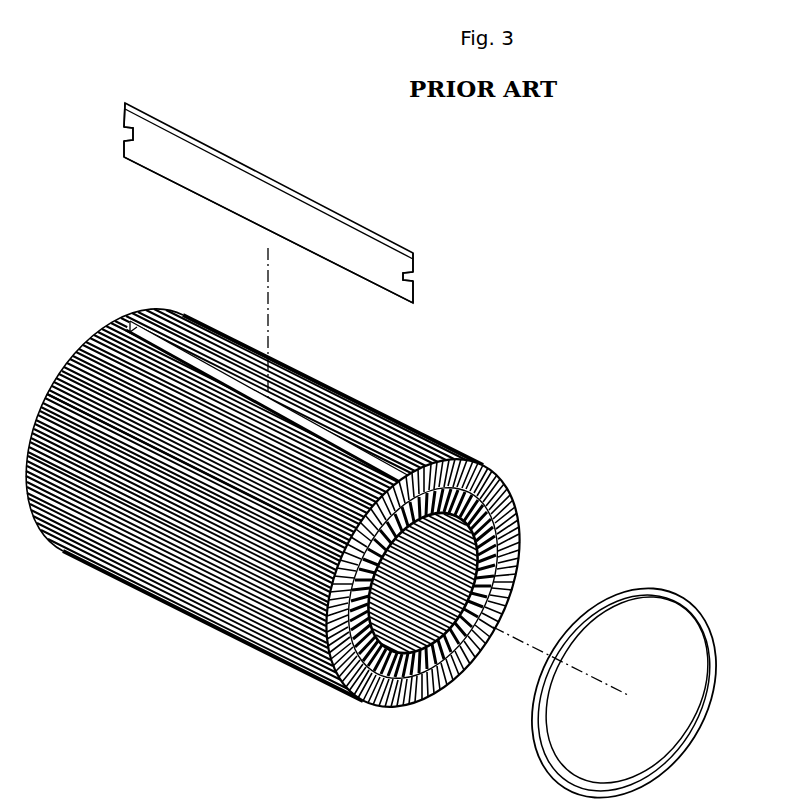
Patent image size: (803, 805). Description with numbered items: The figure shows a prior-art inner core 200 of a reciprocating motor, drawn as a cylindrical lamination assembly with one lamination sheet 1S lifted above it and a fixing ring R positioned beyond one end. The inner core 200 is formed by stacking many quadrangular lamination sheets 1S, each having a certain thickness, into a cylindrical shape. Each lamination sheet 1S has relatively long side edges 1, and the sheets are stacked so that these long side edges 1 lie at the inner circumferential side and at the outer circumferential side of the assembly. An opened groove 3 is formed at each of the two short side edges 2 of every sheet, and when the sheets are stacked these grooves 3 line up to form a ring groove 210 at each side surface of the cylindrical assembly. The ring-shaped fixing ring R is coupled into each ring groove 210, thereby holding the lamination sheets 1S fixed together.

The long side edge 1 is at (284, 186).
The short side edge 2 is at (126, 103).
The opened groove 3 is at (124, 131).
The lamination sheet 1S is at (274, 188).
The inner core 200 is at (310, 524).
The ring groove 210 is at (517, 513).
The fixing ring R is at (699, 602).